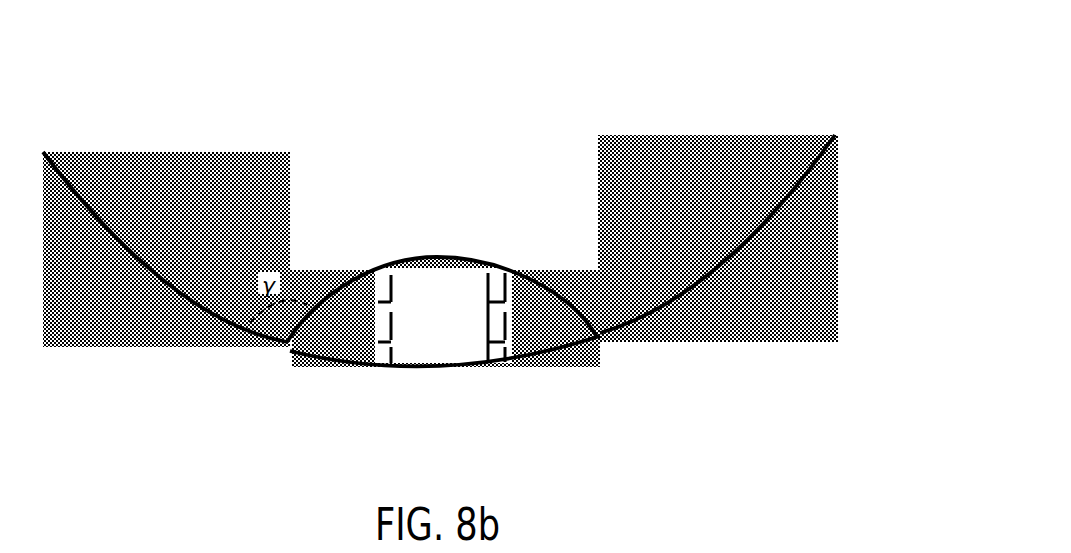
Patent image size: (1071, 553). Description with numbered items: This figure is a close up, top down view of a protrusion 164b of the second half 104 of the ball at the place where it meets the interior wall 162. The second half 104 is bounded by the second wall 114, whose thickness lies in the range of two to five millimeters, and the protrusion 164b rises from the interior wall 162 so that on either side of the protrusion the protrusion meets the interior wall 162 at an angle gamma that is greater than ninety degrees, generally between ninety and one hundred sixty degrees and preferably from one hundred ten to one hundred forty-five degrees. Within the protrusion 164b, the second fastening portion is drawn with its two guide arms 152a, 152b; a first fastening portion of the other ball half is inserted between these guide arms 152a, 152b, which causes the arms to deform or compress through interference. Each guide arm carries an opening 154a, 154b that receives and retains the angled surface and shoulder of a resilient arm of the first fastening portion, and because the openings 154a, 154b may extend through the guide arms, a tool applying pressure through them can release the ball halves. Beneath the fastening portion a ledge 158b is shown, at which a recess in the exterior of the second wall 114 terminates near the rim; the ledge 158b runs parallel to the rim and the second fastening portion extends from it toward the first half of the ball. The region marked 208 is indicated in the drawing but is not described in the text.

The second half 104 is at (755, 81).
The second wall 114 is at (747, 243).
The interior wall 162 is at (80, 200).
The guide arm 152a is at (375, 295).
The guide arm 152b is at (506, 290).
The opening 154a is at (393, 318).
The opening 154b is at (512, 322).
The ledge 158b is at (327, 340).
The protrusion 164b is at (557, 285).
The gap region 208 is at (625, 396).